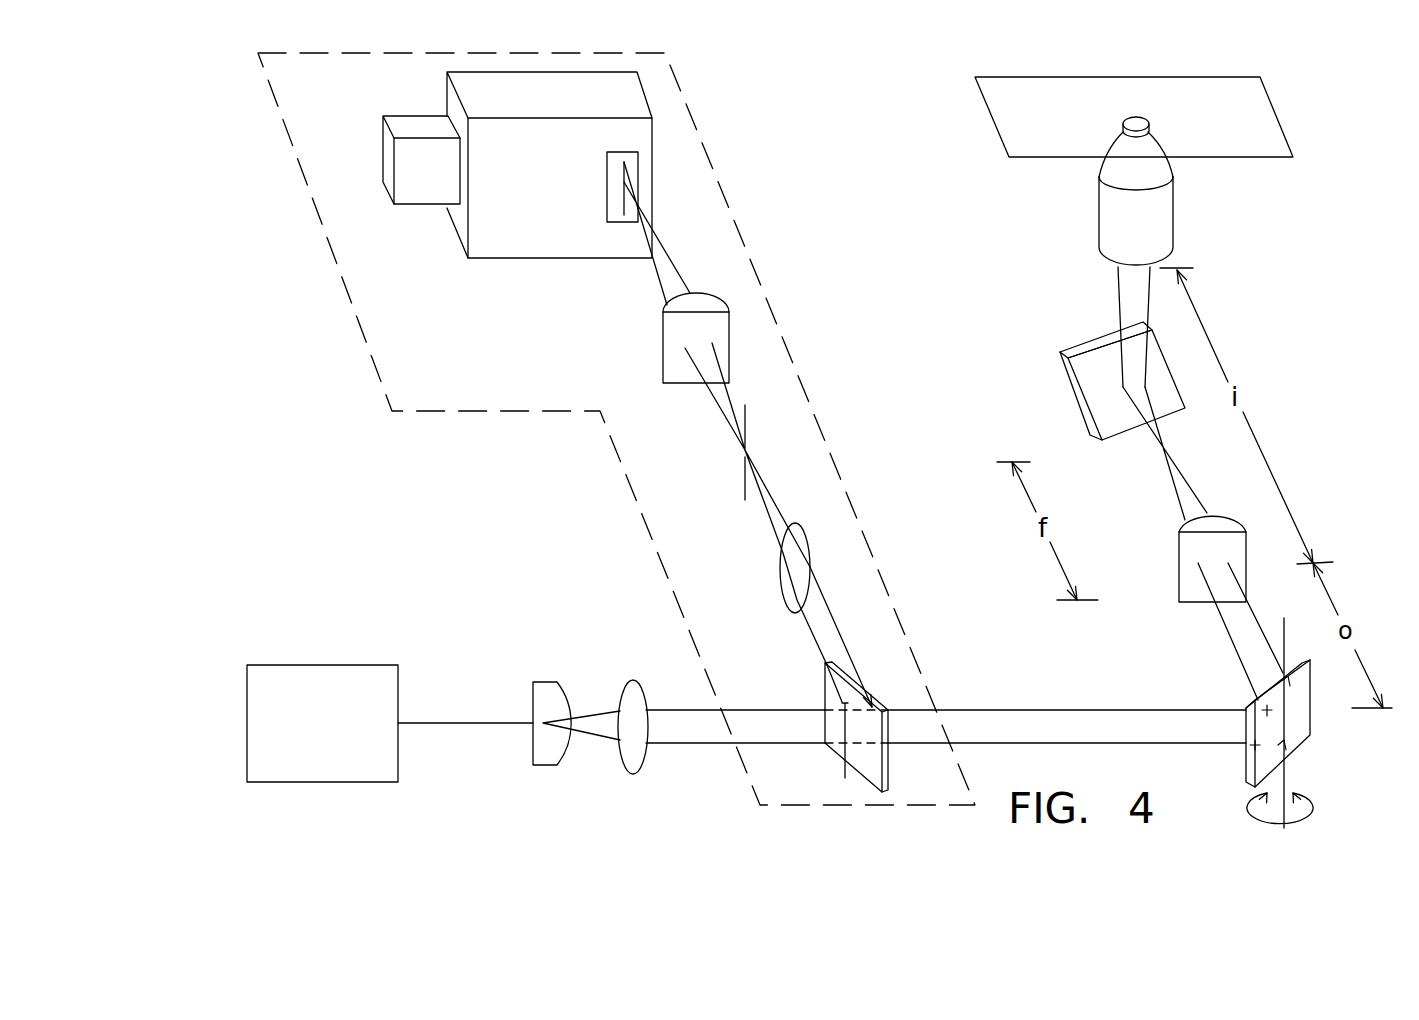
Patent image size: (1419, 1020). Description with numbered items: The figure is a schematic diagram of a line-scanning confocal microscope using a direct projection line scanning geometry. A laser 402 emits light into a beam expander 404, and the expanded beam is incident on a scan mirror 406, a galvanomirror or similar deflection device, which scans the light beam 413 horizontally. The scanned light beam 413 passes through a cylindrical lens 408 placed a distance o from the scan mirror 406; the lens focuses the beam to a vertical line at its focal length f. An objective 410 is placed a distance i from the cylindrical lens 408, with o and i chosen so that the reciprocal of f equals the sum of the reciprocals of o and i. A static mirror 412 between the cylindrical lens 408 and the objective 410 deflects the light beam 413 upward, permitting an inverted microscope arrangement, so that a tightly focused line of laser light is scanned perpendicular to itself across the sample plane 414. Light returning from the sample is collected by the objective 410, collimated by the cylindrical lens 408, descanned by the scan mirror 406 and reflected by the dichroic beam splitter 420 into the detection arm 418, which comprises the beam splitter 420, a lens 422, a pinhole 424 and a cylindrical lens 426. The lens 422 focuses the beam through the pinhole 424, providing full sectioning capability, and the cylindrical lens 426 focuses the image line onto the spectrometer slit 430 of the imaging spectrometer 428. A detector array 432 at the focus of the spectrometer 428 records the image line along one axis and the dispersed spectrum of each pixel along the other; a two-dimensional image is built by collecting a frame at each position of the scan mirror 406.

The laser 402 is at (373, 670).
The beam expander 404 is at (642, 673).
The scan mirror 406 is at (1257, 700).
The cylindrical lens 408 is at (1180, 545).
The objective 410 is at (1160, 220).
The static mirror 412 is at (1105, 357).
The light beam 413 is at (1037, 710).
The sample plane 414 is at (1000, 140).
The detection arm 418 is at (740, 232).
The dichroic beam splitter 420 is at (825, 700).
The lens 422 is at (780, 597).
The pinhole 424 is at (745, 487).
The cylindrical lens 426 is at (662, 363).
The spectrometer 428 is at (503, 233).
The spectrometer slit 430 is at (624, 162).
The detector array 432 is at (387, 163).